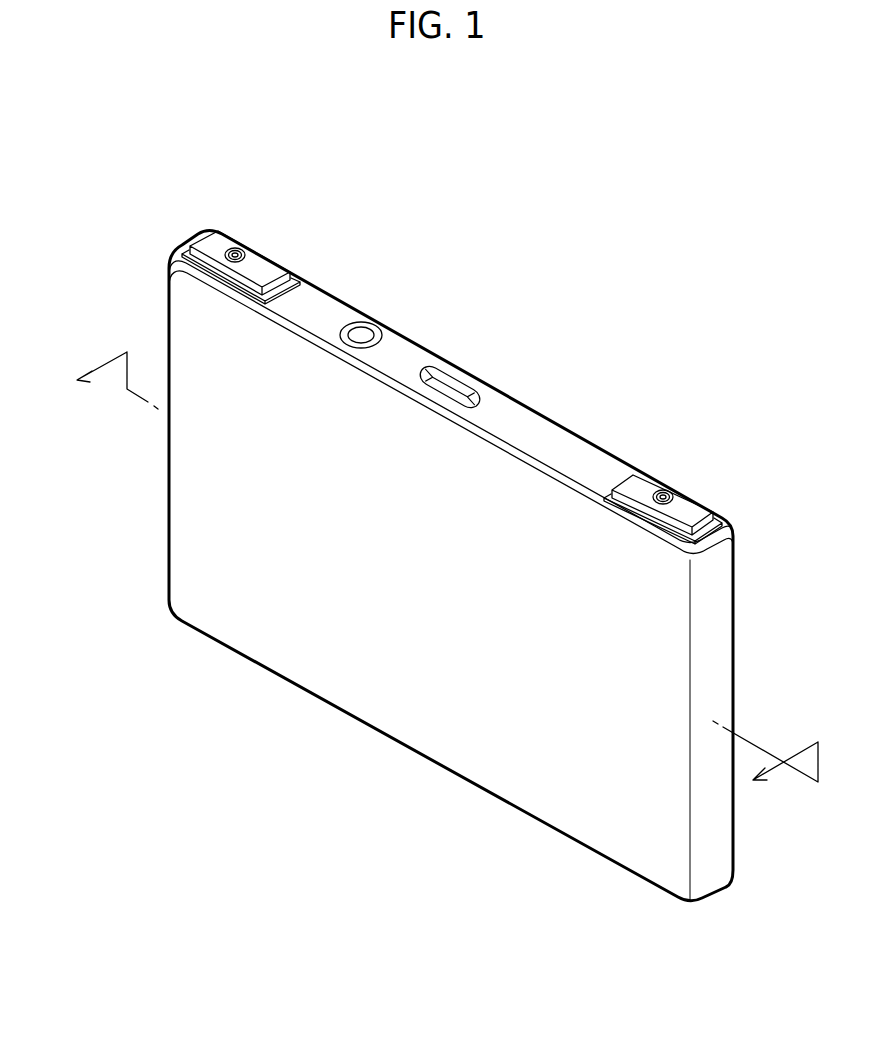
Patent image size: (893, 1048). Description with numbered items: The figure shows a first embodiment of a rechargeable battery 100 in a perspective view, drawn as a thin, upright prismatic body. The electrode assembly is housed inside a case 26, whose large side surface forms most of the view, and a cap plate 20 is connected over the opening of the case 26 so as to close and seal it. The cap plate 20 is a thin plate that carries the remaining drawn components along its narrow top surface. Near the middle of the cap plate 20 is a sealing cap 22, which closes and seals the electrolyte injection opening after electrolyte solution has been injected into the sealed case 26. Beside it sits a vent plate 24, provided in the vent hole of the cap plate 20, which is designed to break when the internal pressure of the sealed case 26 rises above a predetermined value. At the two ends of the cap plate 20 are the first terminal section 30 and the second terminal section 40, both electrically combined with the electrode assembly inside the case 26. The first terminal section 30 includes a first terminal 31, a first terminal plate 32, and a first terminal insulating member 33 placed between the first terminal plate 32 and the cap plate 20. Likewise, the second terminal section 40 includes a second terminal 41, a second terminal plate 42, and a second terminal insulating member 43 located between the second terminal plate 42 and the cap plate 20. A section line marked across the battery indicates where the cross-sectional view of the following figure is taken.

The rechargeable battery 100 is at (498, 165).
The cap plate 20 is at (540, 426).
The sealing cap 22 is at (364, 336).
The vent plate 24 is at (454, 392).
The case 26 is at (410, 720).
The first terminal section 30 is at (334, 221).
The first terminal 31 is at (236, 249).
The first terminal plate 32 is at (259, 267).
The first terminal insulating member 33 is at (289, 280).
The second terminal section 40 is at (760, 461).
The second terminal 41 is at (663, 491).
The second terminal plate 42 is at (690, 506).
The second terminal insulating member 43 is at (717, 515).